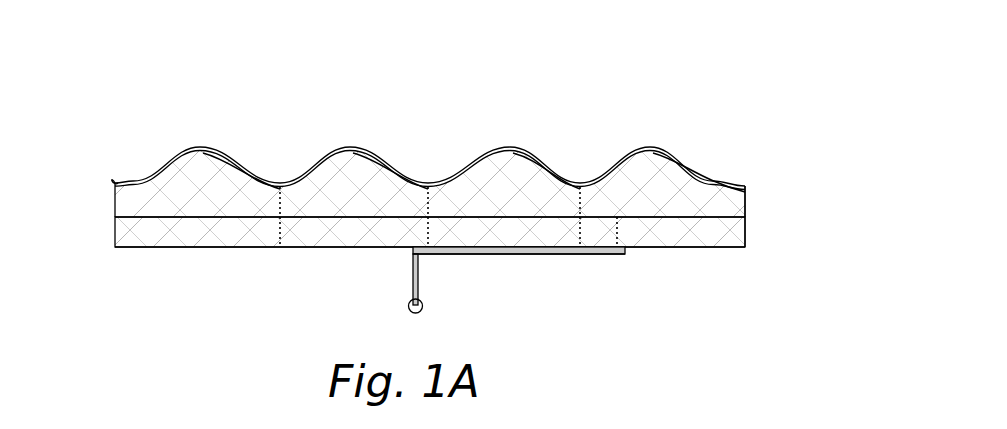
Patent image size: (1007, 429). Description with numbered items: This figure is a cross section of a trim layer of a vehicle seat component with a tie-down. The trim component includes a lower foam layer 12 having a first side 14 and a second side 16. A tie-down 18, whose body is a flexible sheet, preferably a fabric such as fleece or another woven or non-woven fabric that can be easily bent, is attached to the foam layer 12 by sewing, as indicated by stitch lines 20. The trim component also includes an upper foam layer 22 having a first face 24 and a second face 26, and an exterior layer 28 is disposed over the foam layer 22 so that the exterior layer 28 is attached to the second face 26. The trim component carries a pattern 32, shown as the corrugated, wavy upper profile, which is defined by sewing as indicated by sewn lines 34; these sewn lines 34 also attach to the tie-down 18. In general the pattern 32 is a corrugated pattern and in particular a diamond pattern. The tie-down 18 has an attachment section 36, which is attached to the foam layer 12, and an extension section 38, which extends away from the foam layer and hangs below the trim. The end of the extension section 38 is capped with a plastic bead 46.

The foam layer 12 is at (122, 233).
The first side 14 is at (150, 248).
The second side 16 is at (183, 213).
The tie-down 18 is at (420, 263).
The stitch lines 20 is at (618, 228).
The foam layer 22 is at (125, 202).
The first face 24 is at (688, 210).
The second face 26 is at (688, 167).
The exterior layer 28 is at (666, 151).
The pattern 32 is at (148, 143).
The sewn lines 34 is at (237, 152).
The attachment section 36 is at (568, 254).
The extension section 38 is at (413, 283).
The plastic bead 46 is at (423, 306).